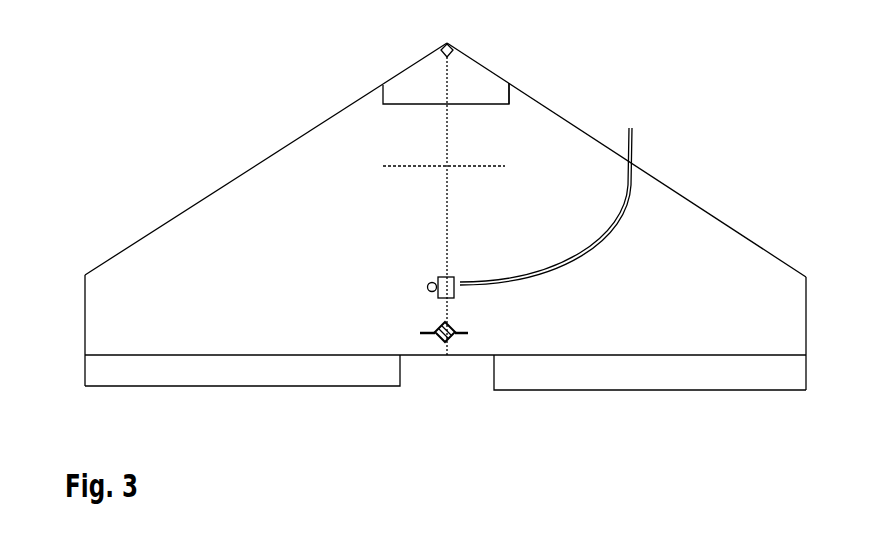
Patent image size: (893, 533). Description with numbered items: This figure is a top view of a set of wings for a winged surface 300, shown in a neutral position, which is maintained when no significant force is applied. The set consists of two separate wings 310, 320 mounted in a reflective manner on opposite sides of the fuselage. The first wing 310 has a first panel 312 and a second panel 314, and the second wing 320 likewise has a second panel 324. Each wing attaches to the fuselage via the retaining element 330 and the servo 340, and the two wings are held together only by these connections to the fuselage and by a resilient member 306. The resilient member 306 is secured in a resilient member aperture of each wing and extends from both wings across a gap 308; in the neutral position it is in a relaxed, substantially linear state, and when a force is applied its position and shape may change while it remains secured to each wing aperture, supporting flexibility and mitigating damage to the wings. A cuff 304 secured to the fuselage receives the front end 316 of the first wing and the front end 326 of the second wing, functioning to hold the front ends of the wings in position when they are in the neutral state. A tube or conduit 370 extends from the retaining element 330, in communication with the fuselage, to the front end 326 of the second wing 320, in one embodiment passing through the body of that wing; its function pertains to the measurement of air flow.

The winged surface 300 is at (486, 427).
The cuff 304 is at (497, 75).
The resilient member 306 is at (393, 167).
The gap 308 is at (449, 193).
The wing 310 is at (178, 215).
The first panel 312 is at (190, 370).
The second panel 314 is at (160, 287).
The front end 316 is at (418, 85).
The wing 320 is at (582, 125).
The second panel 324 is at (684, 202).
The front end 326 is at (500, 82).
The retaining element 330 is at (437, 275).
The servo 340 is at (425, 330).
The tube or conduit 370 is at (565, 263).